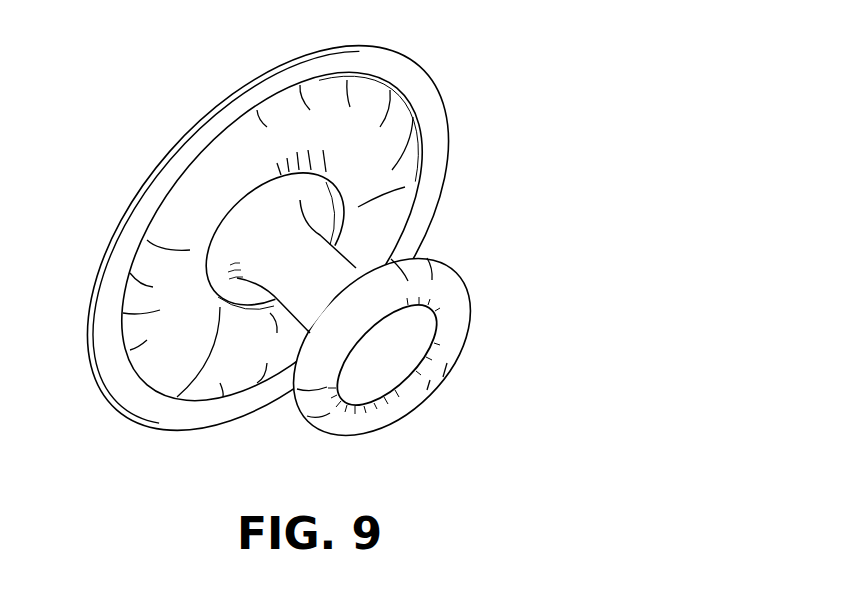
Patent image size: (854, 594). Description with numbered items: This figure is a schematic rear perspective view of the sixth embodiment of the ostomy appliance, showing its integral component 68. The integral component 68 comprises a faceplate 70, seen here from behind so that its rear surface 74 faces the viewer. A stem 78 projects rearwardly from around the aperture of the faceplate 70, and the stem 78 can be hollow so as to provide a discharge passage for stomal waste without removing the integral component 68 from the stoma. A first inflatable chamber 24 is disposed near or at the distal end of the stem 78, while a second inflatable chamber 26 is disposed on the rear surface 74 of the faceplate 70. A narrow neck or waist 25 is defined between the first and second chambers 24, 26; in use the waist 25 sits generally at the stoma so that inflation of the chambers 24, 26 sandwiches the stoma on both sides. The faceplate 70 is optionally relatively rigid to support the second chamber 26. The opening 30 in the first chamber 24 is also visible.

The integral component 68 is at (276, 248).
The faceplate 70 is at (440, 93).
The rear surface 74 is at (432, 133).
The second inflatable chamber 26 is at (373, 92).
The waist 25 is at (328, 265).
The stem 78 is at (356, 262).
The first inflatable chamber 24 is at (397, 347).
The opening 30 is at (382, 354).